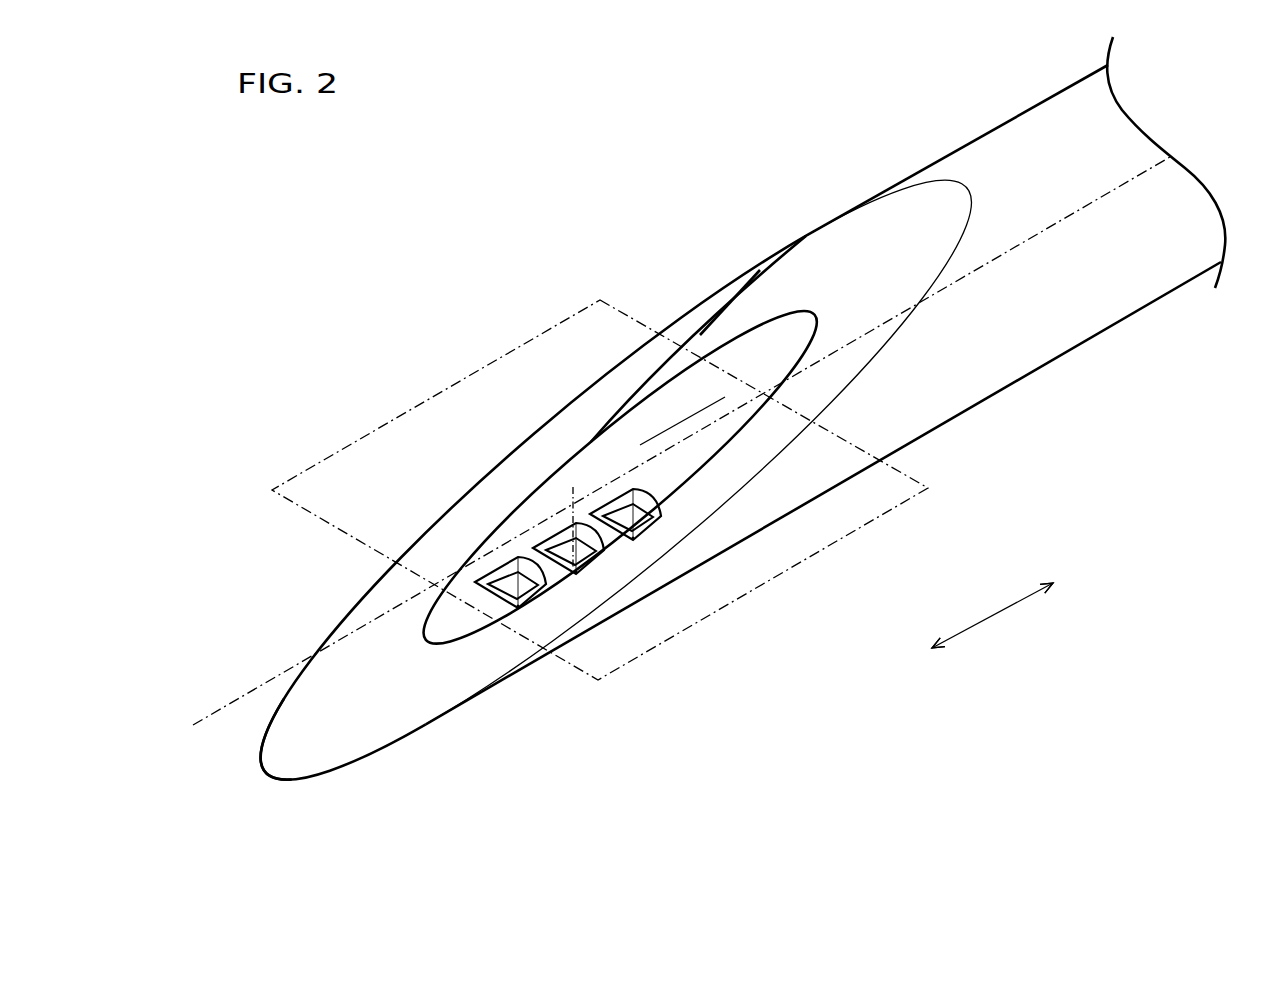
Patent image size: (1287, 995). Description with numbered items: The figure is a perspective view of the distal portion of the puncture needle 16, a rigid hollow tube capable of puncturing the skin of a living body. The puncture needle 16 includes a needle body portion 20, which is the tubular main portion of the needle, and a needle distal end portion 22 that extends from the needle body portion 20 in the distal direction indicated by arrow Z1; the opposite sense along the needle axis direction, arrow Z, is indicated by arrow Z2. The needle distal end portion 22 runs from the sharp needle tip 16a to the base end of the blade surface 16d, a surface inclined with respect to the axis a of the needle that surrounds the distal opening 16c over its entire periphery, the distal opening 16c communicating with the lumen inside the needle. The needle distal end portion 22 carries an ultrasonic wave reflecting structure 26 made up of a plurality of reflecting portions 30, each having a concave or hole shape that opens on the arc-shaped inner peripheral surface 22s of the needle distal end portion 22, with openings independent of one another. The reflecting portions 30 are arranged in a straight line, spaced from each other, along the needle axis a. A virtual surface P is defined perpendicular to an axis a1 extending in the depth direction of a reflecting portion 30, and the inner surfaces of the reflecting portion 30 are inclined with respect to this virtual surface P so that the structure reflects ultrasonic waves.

The puncture needle 16 is at (718, 111).
The needle tip 16a is at (270, 770).
The distal opening 16c is at (607, 428).
The blade surface 16d is at (700, 333).
The needle body portion 20 is at (1010, 118).
The needle distal end portion 22 is at (362, 600).
The inner peripheral surface 22s is at (592, 468).
The ultrasonic wave reflecting structure 26 is at (550, 502).
The reflecting portion 30 is at (565, 553).
The axis a is at (672, 450).
The axis in the depth direction of the reflecting portion a1 is at (571, 513).
The virtual surface P is at (378, 428).
The axial direction Z is at (992, 615).
The distal direction Z1 is at (925, 653).
The proximal direction Z2 is at (1059, 578).